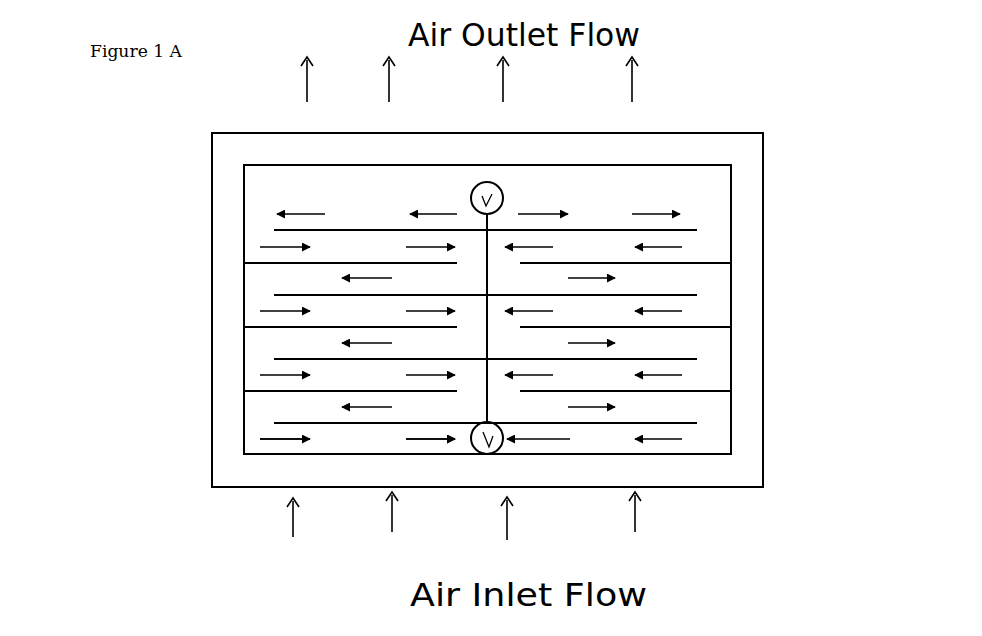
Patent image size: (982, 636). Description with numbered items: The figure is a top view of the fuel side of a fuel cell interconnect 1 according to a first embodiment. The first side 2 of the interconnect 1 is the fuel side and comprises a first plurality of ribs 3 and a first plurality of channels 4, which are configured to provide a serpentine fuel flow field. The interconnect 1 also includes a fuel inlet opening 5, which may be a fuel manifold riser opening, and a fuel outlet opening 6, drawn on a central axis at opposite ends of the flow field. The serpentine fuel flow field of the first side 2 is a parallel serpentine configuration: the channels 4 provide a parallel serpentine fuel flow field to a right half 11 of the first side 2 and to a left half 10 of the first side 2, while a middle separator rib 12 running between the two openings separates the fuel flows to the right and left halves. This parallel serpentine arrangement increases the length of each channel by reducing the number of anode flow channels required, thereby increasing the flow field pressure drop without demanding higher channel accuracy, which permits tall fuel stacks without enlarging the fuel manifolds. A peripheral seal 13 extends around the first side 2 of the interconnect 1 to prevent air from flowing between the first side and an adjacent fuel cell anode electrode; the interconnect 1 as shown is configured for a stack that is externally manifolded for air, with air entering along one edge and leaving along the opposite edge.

The interconnect 1 is at (800, 150).
The first side 2 is at (178, 248).
The first plurality of ribs 3 is at (287, 328).
The first plurality of channels 4 is at (327, 439).
The fuel inlet opening 5 is at (491, 199).
The fuel outlet opening 6 is at (497, 446).
The left half 10 is at (375, 197).
The right half 11 is at (630, 197).
The middle separator rib 12 is at (493, 266).
The peripheral seal 13 is at (752, 292).